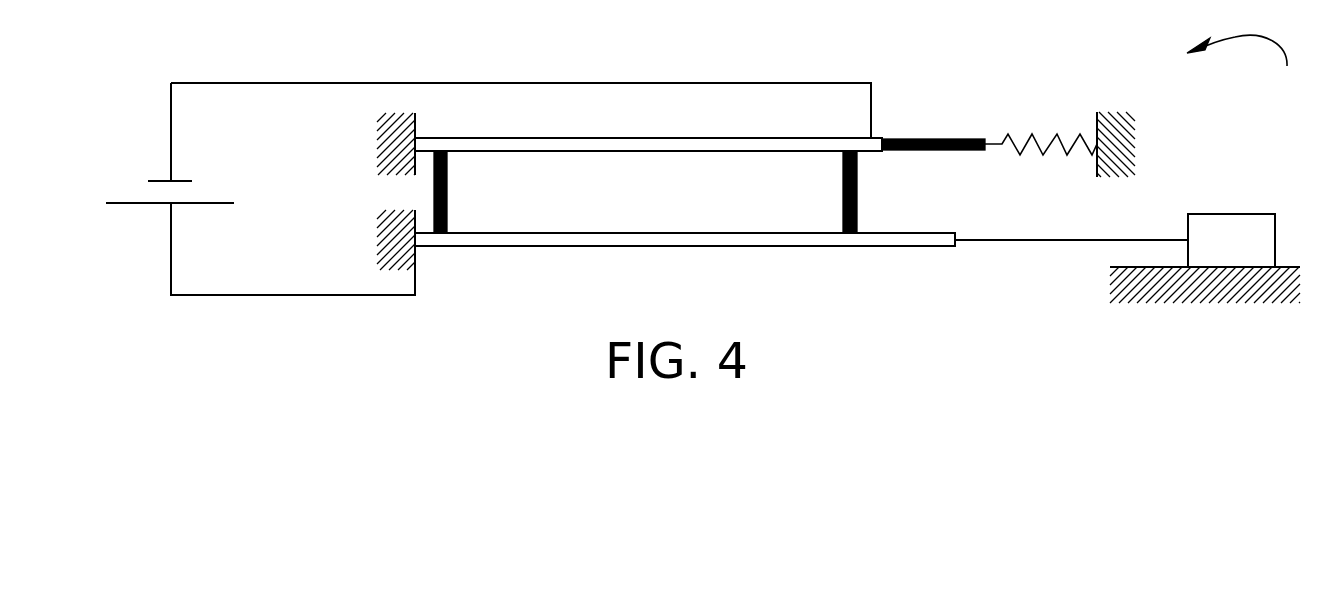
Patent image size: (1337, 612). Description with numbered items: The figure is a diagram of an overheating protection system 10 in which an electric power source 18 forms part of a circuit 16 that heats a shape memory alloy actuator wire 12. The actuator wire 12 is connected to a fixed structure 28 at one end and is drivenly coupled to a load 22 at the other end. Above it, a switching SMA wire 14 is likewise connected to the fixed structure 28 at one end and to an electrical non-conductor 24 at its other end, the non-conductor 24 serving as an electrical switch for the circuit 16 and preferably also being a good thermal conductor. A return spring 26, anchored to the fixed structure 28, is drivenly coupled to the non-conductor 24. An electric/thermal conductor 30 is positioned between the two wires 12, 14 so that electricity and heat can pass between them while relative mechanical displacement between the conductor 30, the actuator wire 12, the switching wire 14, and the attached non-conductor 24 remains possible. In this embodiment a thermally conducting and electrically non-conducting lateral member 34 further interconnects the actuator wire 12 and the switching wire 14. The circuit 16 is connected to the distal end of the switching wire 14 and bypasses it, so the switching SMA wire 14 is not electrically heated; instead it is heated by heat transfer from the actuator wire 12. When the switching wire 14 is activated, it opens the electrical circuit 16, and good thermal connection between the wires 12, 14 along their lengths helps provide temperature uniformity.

The overheating protection system 10 is at (1253, 78).
The shape memory alloy actuator wire 12 is at (880, 248).
The switching SMA wire 14 is at (738, 152).
The circuit 16 is at (325, 84).
The electric power source 18 is at (135, 204).
The load 22 is at (1275, 240).
The electrical non-conductor 24 is at (965, 139).
The return spring 26 is at (1058, 133).
The fixed structure 28 is at (377, 230).
The electric/thermal conductor 30 is at (858, 196).
The thermally conducting and electrically non-conducting lateral member 34 is at (506, 203).